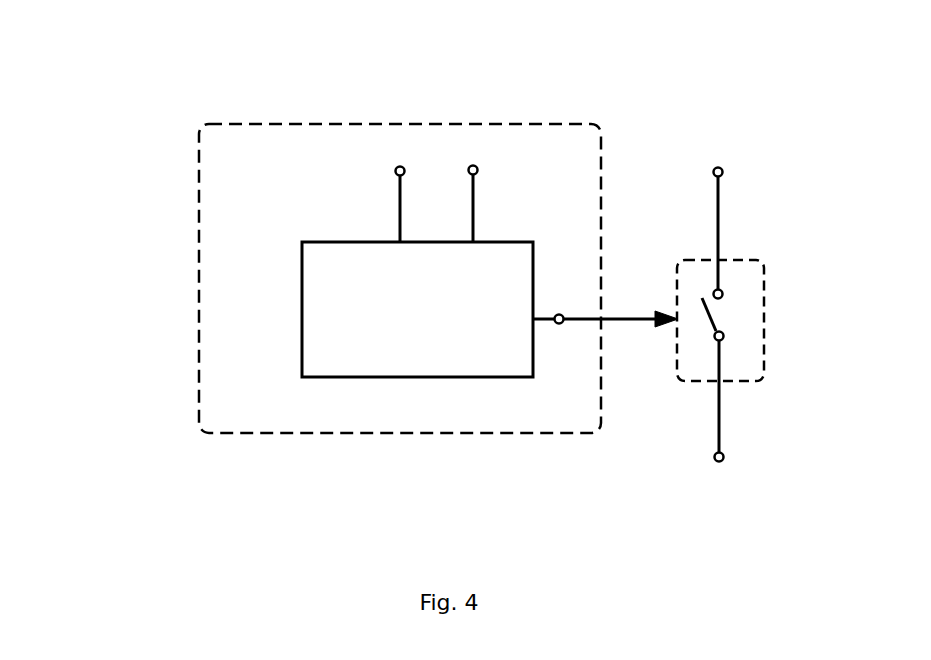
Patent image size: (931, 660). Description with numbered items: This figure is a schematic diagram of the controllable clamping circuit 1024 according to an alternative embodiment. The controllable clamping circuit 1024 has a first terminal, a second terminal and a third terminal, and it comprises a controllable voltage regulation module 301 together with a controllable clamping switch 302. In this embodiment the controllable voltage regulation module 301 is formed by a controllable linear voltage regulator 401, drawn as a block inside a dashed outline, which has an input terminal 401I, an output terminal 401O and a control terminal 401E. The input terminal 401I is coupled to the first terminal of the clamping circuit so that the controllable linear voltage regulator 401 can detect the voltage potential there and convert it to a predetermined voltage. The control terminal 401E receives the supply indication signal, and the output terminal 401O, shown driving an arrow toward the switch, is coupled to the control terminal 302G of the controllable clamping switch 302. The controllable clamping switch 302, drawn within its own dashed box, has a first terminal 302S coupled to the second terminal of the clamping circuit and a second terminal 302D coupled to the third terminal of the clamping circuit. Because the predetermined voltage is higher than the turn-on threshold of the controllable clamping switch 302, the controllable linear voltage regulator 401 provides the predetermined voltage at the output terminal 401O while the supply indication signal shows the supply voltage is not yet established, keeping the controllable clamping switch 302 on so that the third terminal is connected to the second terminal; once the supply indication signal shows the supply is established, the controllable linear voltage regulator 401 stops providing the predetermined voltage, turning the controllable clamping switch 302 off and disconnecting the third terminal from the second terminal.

The controllable clamping circuit 1024 is at (152, 71).
The controllable voltage regulation module 301 is at (230, 433).
The controllable linear voltage regulator 401 is at (298, 292).
The control terminal 401E is at (398, 190).
The input terminal 401I is at (493, 190).
The output terminal 401O is at (605, 306).
The controllable clamping switch 302 is at (766, 315).
The second terminal 302D is at (720, 290).
The control terminal 302G is at (706, 328).
The first terminal 302S is at (725, 338).